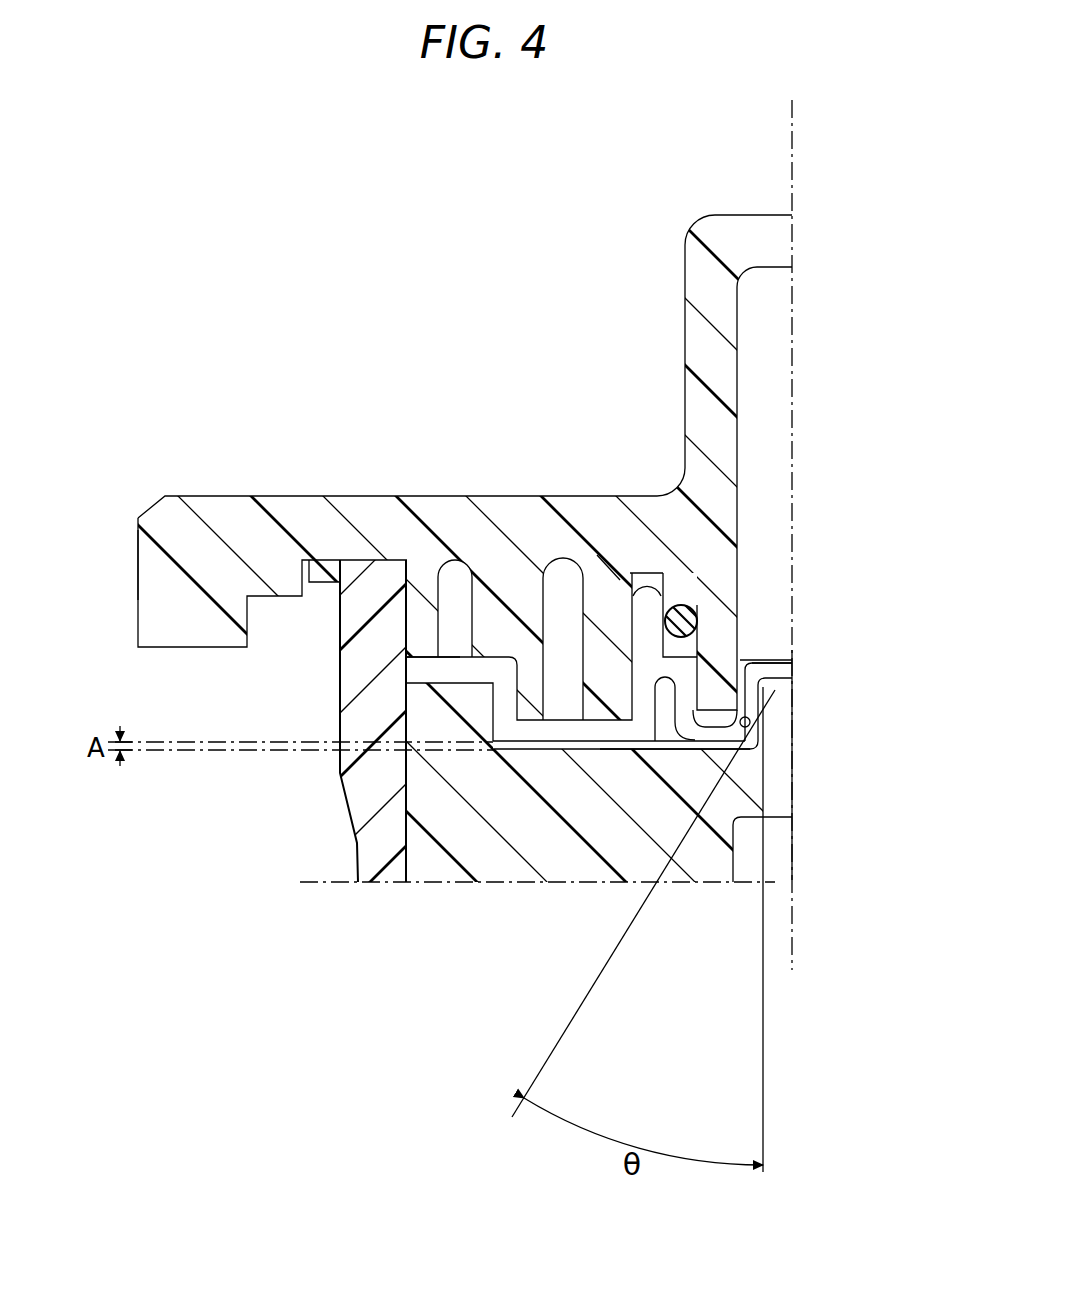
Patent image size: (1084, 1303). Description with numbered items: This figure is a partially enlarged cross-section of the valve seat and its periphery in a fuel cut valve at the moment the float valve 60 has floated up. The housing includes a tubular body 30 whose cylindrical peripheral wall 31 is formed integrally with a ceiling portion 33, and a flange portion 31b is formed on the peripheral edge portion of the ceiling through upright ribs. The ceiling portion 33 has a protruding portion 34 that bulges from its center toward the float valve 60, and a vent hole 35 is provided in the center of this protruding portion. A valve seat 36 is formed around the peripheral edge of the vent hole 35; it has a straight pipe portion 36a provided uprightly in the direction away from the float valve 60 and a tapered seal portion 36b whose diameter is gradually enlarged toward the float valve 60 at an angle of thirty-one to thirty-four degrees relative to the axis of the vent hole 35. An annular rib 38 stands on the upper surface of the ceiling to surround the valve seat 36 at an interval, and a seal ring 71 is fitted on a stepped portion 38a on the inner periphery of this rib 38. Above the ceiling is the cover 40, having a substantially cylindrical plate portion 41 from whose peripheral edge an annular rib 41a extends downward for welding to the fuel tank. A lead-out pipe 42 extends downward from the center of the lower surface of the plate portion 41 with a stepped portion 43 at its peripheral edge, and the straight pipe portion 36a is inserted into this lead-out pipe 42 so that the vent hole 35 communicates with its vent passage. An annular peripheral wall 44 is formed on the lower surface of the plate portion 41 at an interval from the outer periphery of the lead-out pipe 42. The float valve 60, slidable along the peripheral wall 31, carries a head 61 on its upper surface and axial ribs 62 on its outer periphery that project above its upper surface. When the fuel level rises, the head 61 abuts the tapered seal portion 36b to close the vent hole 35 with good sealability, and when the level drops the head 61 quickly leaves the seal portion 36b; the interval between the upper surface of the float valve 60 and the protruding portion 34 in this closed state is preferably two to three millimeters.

The tubular body 30 is at (426, 581).
The peripheral wall 31 is at (355, 803).
The flange portion 31b is at (325, 573).
The ceiling portion 33 is at (450, 667).
The protruding portion 34 is at (552, 735).
The vent hole 35 is at (777, 655).
The valve seat 36 is at (722, 689).
The straight pipe portion 36a is at (765, 665).
The seal portion 36b is at (770, 710).
The annular rib 38 is at (647, 597).
The stepped portion 38a is at (620, 628).
The cover 40 is at (542, 523).
The plate portion 41 is at (258, 497).
The annular rib 41a is at (150, 600).
The lead-out pipe 42 is at (741, 226).
The stepped portion 43 is at (680, 603).
The annular peripheral wall 44 is at (598, 593).
The float valve 60 is at (584, 673).
The head 61 is at (765, 747).
The ribs 62 is at (427, 720).
The seal ring 71 is at (697, 620).